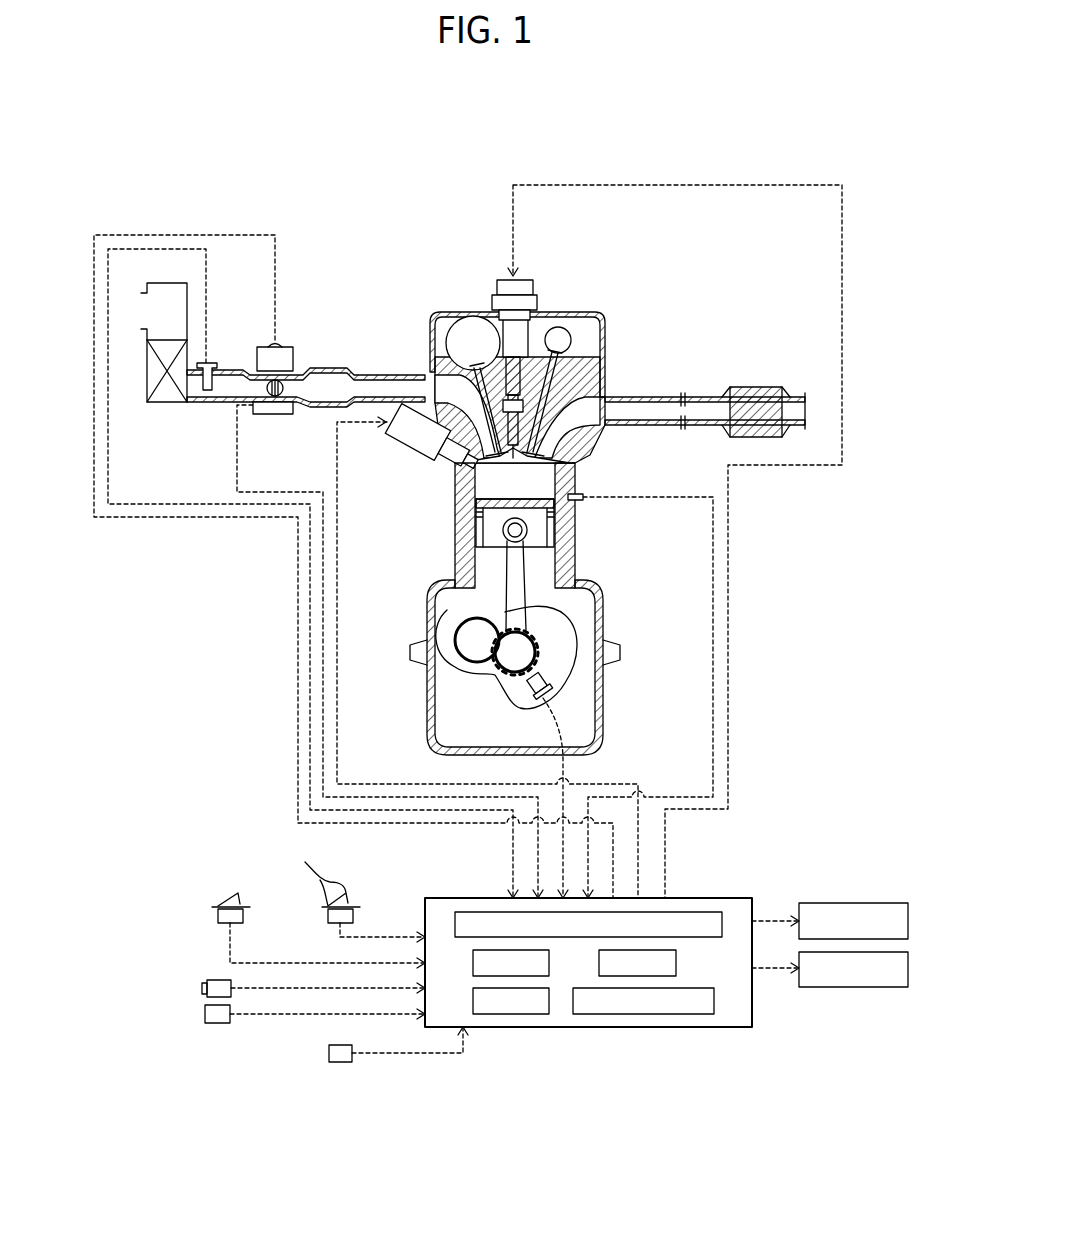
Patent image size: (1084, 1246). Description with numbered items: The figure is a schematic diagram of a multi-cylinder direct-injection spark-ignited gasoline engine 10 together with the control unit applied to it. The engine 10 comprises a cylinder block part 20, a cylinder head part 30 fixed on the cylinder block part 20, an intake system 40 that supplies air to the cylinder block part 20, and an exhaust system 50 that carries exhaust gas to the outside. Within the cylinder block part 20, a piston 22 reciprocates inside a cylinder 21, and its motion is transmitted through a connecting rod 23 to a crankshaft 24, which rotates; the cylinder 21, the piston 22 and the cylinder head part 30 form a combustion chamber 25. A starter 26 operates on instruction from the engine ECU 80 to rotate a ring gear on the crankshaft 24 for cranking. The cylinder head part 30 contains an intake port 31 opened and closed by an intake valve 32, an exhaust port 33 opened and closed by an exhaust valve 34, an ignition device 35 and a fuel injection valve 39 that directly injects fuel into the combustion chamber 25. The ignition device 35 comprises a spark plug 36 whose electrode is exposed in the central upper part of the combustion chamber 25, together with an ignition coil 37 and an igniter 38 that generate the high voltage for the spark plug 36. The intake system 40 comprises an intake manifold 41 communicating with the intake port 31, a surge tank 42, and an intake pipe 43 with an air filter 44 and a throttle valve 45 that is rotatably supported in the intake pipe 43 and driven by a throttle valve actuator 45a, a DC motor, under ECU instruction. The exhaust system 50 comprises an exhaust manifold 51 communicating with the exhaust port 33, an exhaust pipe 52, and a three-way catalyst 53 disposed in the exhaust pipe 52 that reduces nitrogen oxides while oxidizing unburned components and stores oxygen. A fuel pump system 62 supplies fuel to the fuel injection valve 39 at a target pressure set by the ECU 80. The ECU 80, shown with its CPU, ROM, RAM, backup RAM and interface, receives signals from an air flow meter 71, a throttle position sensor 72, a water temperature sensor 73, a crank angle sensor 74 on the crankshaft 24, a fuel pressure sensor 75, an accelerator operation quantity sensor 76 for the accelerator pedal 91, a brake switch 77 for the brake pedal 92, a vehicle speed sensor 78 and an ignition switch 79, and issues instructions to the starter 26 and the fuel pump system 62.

The internal combustion engine 10 is at (522, 491).
The cylinder block part 20 is at (534, 609).
The cylinder 21 is at (557, 492).
The piston 22 is at (490, 508).
The connecting rod 23 is at (483, 583).
The crankshaft 24 is at (513, 653).
The combustion chamber 25 is at (528, 494).
The starter motor 26 is at (846, 903).
The cylinder head part 30 is at (512, 368).
The intake port 31 is at (470, 448).
The intake valve 32 is at (462, 470).
The exhaust port 33 is at (568, 433).
The exhaust valve 34 is at (550, 450).
The ignition device 35 is at (549, 343).
The spark plug 36 is at (560, 398).
The ignition coil 37 is at (512, 335).
The igniter 38 is at (533, 290).
The fuel injection valve 39 is at (395, 440).
The intake system 40 is at (283, 350).
The intake manifold 41 is at (398, 374).
The surge tank 42 is at (330, 368).
The intake pipe 43 is at (217, 403).
The air filter 44 is at (168, 403).
The throttle valve 45 is at (283, 381).
The throttle valve actuator 45a is at (277, 343).
The exhaust system 50 is at (705, 348).
The exhaust manifold 51 is at (646, 397).
The exhaust pipe 52 is at (705, 397).
The three-way catalyst 53 is at (756, 388).
The fuel pump system 62 is at (847, 988).
The air flow meter 71 is at (212, 363).
The throttle position sensor 72 is at (272, 415).
The water temperature sensor 73 is at (583, 498).
The crank angle sensor 74 is at (547, 682).
The fuel pressure sensor 75 is at (329, 1052).
The accelerator operation quantity sensor 76 is at (328, 919).
The brake switch 77 is at (218, 919).
The vehicle speed sensor 78 is at (212, 980).
The ignition switch 79 is at (212, 1023).
The engine ECU 80 is at (627, 1028).
The accelerator pedal 91 is at (352, 898).
The brake pedal 92 is at (226, 897).